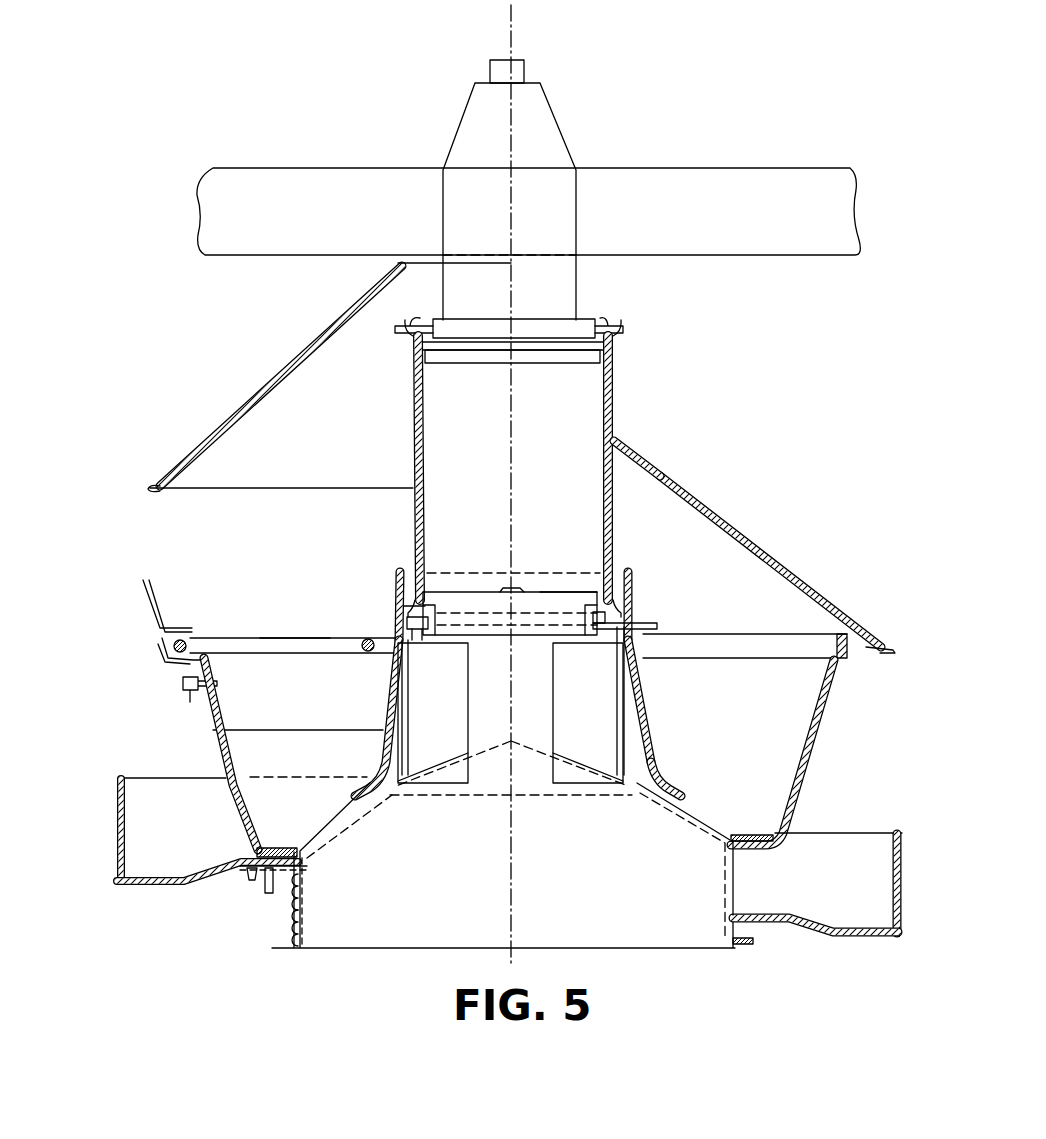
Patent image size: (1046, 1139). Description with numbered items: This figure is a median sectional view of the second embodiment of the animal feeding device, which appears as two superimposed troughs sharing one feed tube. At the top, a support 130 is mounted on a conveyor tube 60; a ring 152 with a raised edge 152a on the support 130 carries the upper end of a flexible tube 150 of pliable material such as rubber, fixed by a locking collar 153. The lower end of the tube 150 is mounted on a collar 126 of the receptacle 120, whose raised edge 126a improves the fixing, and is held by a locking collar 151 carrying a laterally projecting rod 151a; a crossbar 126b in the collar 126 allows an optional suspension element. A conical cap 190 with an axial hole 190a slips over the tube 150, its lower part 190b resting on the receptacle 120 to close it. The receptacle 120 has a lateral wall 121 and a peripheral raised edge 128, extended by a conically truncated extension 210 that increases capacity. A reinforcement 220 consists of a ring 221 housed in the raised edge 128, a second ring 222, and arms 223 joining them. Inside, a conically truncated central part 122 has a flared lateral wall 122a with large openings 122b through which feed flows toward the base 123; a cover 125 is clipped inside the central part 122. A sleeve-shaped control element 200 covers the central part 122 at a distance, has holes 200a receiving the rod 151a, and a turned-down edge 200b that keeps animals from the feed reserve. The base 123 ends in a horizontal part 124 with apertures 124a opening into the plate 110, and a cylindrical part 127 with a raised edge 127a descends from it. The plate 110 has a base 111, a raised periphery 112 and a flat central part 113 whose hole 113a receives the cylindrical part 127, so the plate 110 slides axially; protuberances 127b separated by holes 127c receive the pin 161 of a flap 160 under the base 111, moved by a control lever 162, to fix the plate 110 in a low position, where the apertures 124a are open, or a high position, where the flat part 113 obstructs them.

The conveyor tube 60 is at (327, 187).
The support 130 is at (563, 226).
The ring 152 is at (534, 316).
The raised edge of the ring 152a is at (612, 363).
The locking collar 153 is at (623, 330).
The suspension element tube 150 is at (613, 530).
The cap 190 is at (792, 570).
The axial hole 190a is at (620, 437).
The lower part of the cap 190b is at (908, 642).
The control element 200 is at (637, 593).
The holes 200a is at (647, 667).
The turned down raised edge 200b is at (672, 795).
The locking collar 151 is at (398, 603).
The rod 151a is at (660, 620).
The collar 126 is at (440, 593).
The raised edge of the collar 126a is at (573, 593).
The crossbar 126b is at (527, 587).
The reinforcement 220 is at (258, 635).
The ring 221 is at (195, 638).
The second ring 222 is at (366, 651).
The arms 223 is at (291, 650).
The extension 210 is at (161, 590).
The peripheral raised edge 128 is at (165, 658).
The receptacle 120 is at (828, 727).
The lateral wall 121 is at (233, 776).
The central part 122 is at (513, 684).
The lateral wall of the central part 122a is at (627, 693).
The openings 122b is at (468, 712).
The cover 125 is at (483, 740).
The base 123 is at (353, 817).
The plate 110 is at (177, 775).
The base of the plate 111 is at (153, 884).
The raised periphery 112 is at (115, 838).
The horizontal part 124 is at (282, 847).
The apertures 124a is at (752, 835).
The pin 161 is at (307, 867).
The flap 160 is at (253, 883).
The control lever 162 is at (268, 897).
The cylindrical part 127 is at (470, 900).
The raised edge 127a is at (740, 948).
The protuberances 127b is at (303, 903).
The holes 127c is at (303, 932).
The flat central part 113 is at (777, 907).
The hole 113a is at (733, 910).